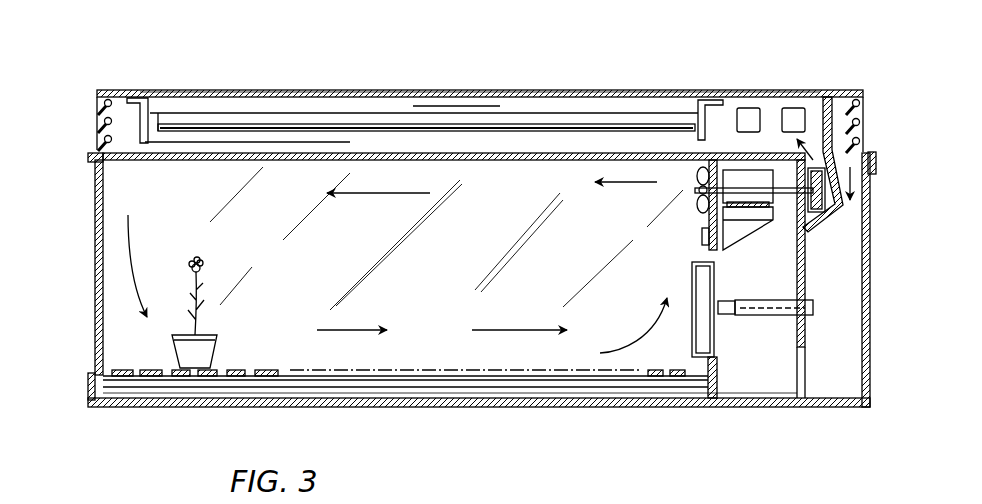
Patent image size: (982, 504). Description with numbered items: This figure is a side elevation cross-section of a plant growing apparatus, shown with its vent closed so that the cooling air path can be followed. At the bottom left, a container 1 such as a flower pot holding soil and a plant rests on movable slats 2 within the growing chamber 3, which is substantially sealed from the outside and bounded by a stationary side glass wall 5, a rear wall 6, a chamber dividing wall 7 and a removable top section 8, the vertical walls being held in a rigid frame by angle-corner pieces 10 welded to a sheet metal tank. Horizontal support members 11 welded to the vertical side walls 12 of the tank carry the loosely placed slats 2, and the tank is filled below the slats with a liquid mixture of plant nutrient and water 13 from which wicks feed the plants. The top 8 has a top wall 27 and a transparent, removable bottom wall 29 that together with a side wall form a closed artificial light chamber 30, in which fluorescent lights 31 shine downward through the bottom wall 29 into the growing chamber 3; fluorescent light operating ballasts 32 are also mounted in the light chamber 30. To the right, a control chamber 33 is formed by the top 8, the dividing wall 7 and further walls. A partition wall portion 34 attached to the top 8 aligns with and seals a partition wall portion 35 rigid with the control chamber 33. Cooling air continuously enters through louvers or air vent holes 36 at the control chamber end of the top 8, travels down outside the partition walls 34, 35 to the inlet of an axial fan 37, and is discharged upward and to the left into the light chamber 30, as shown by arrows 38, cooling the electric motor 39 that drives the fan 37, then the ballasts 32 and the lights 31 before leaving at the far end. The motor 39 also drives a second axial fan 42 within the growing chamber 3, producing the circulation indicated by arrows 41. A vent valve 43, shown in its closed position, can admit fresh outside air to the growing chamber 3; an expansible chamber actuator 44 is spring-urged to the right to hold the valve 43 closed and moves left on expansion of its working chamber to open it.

The container 1 is at (204, 352).
The slats 2 is at (268, 369).
The growing chamber 3 is at (396, 296).
The stationary side glass wall 5 is at (492, 358).
The rear wall 6 is at (104, 213).
The chamber dividing wall 7 is at (705, 226).
The top section 8 is at (378, 86).
The angle-corner pieces 10 is at (95, 320).
The support members 11 is at (316, 384).
The vertical side walls 12 is at (88, 393).
The liquid mixture of plant nutrient and water 13 is at (207, 393).
The top wall 27 is at (503, 90).
The bottom wall 29 is at (456, 158).
The artificial light chamber 30 is at (583, 100).
The fluorescent lights 31 is at (272, 115).
The fluorescent light operating ballasts 32 is at (793, 108).
The control chamber 33 is at (755, 392).
The partition wall portion 34 is at (834, 102).
The partition wall portion 35 is at (806, 274).
The louvers or air vent holes 36 is at (868, 150).
The axial fan 37 is at (816, 212).
The arrows 38 is at (100, 128).
The electric motor 39 is at (745, 183).
The arrows 41 is at (627, 182).
The axial fan 42 is at (694, 210).
The vent valve 43 is at (690, 328).
The expansible chamber actuator 44 is at (757, 316).